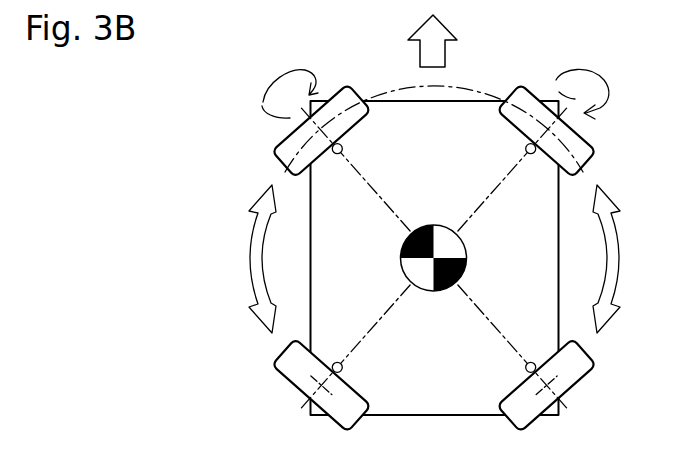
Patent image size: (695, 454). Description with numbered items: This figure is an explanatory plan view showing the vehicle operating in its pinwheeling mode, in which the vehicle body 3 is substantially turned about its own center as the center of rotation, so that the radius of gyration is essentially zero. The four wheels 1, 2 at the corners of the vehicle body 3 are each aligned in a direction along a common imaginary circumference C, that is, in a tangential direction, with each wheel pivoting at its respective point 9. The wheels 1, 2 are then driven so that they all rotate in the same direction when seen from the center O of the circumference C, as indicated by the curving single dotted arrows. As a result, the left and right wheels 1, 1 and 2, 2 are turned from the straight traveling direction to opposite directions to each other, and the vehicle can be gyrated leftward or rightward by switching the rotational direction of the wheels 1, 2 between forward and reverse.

The wheel 1 is at (278, 150).
The wheel 2 is at (281, 367).
The vehicle body 3 is at (300, 264).
The steering pivot 9 is at (344, 154).
The center of the circumference O is at (428, 272).
The common imaginary circumference C is at (458, 88).